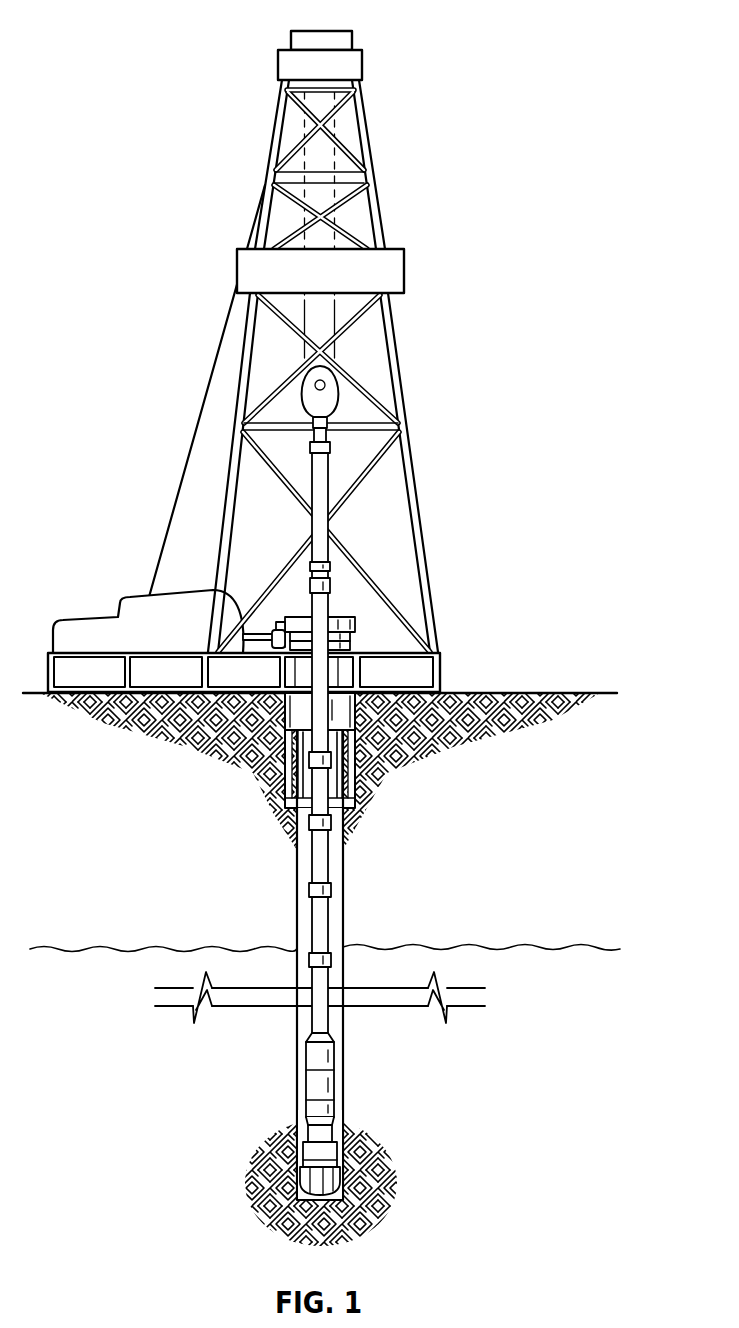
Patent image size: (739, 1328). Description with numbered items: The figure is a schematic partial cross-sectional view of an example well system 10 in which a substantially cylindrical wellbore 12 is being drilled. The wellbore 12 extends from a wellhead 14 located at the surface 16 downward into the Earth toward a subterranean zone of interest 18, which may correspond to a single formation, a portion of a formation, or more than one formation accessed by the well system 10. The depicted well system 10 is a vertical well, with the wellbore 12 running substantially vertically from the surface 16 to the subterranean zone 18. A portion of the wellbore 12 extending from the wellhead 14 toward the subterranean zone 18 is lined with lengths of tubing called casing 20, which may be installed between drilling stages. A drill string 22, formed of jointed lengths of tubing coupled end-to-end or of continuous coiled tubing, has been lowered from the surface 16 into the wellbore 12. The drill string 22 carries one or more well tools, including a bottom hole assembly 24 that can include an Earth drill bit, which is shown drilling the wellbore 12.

The well system 10 is at (128, 46).
The wellbore 12 is at (333, 910).
The wellhead 14 is at (452, 569).
The surface 16 is at (575, 692).
The subterranean zone of interest 18 is at (401, 1109).
The casing 20 is at (292, 781).
The drill string 22 is at (318, 932).
The bottom hole assembly 24 is at (298, 1177).